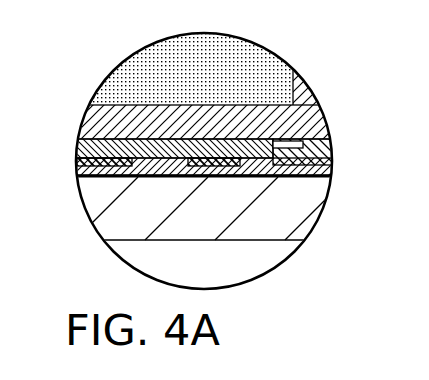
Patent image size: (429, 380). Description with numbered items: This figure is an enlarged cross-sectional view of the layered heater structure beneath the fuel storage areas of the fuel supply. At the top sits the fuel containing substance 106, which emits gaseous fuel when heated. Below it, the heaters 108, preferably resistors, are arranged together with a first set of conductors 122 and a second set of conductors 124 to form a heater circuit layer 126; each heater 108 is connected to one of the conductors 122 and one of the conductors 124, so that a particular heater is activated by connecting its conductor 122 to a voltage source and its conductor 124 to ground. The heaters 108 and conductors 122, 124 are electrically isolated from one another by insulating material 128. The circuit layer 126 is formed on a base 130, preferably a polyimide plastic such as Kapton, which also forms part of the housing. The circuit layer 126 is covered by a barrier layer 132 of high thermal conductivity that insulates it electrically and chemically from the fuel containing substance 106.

The fuel containing substance 106 is at (172, 68).
The heater 108 is at (133, 152).
The first set of conductors 122 is at (133, 176).
The second set of conductors 124 is at (308, 114).
The heater circuit layer 126 is at (338, 163).
The insulating material 128 is at (290, 178).
The base 130 is at (120, 227).
The barrier layer 132 is at (323, 104).